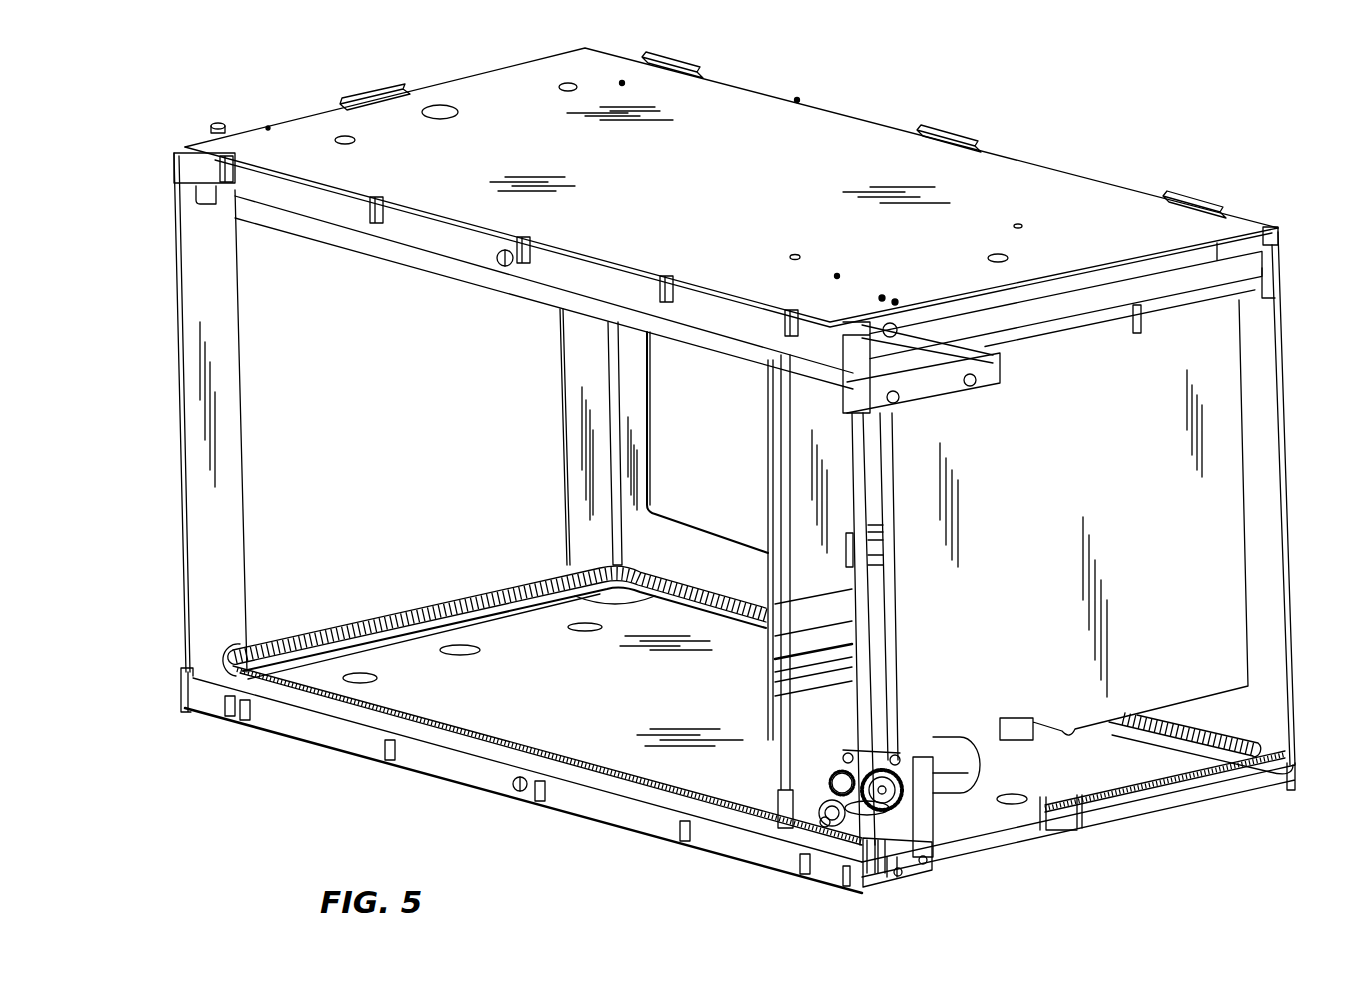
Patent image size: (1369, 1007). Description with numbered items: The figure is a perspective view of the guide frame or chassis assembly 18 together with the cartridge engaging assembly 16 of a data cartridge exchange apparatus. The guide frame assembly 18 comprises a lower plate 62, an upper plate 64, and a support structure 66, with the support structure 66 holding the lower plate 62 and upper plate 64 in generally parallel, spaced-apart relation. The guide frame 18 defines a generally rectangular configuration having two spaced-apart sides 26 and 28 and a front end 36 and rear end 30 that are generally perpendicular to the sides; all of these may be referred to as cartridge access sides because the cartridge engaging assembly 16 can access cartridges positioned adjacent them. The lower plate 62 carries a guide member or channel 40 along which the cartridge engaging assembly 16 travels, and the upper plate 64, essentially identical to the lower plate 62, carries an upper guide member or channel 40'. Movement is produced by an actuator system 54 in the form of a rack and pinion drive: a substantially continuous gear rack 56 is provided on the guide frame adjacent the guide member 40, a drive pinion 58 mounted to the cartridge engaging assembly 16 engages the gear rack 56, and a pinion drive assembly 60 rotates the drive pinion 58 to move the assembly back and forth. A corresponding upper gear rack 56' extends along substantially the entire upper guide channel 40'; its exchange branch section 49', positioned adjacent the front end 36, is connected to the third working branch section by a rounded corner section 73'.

The guide frame assembly 18 is at (704, 138).
The upper plate 64 is at (731, 189).
The support structure 66 is at (171, 412).
The rear end 30 is at (153, 690).
The side 26 is at (527, 782).
The actuator system 54 is at (523, 807).
The gear rack 56 is at (547, 755).
The guide member 40 is at (742, 661).
The lower plate 62 is at (768, 696).
The cartridge engaging assembly 16 is at (904, 564).
The upper guide member 40' is at (921, 553).
The upper gear rack 56' is at (1066, 320).
The exchange branch section 49' is at (1137, 340).
The rounded corner section 73' is at (1305, 291).
The side 28 is at (1309, 496).
The front end 36 is at (1078, 814).
The pinion drive assembly 60 is at (980, 797).
The drive pinion 58 is at (892, 832).